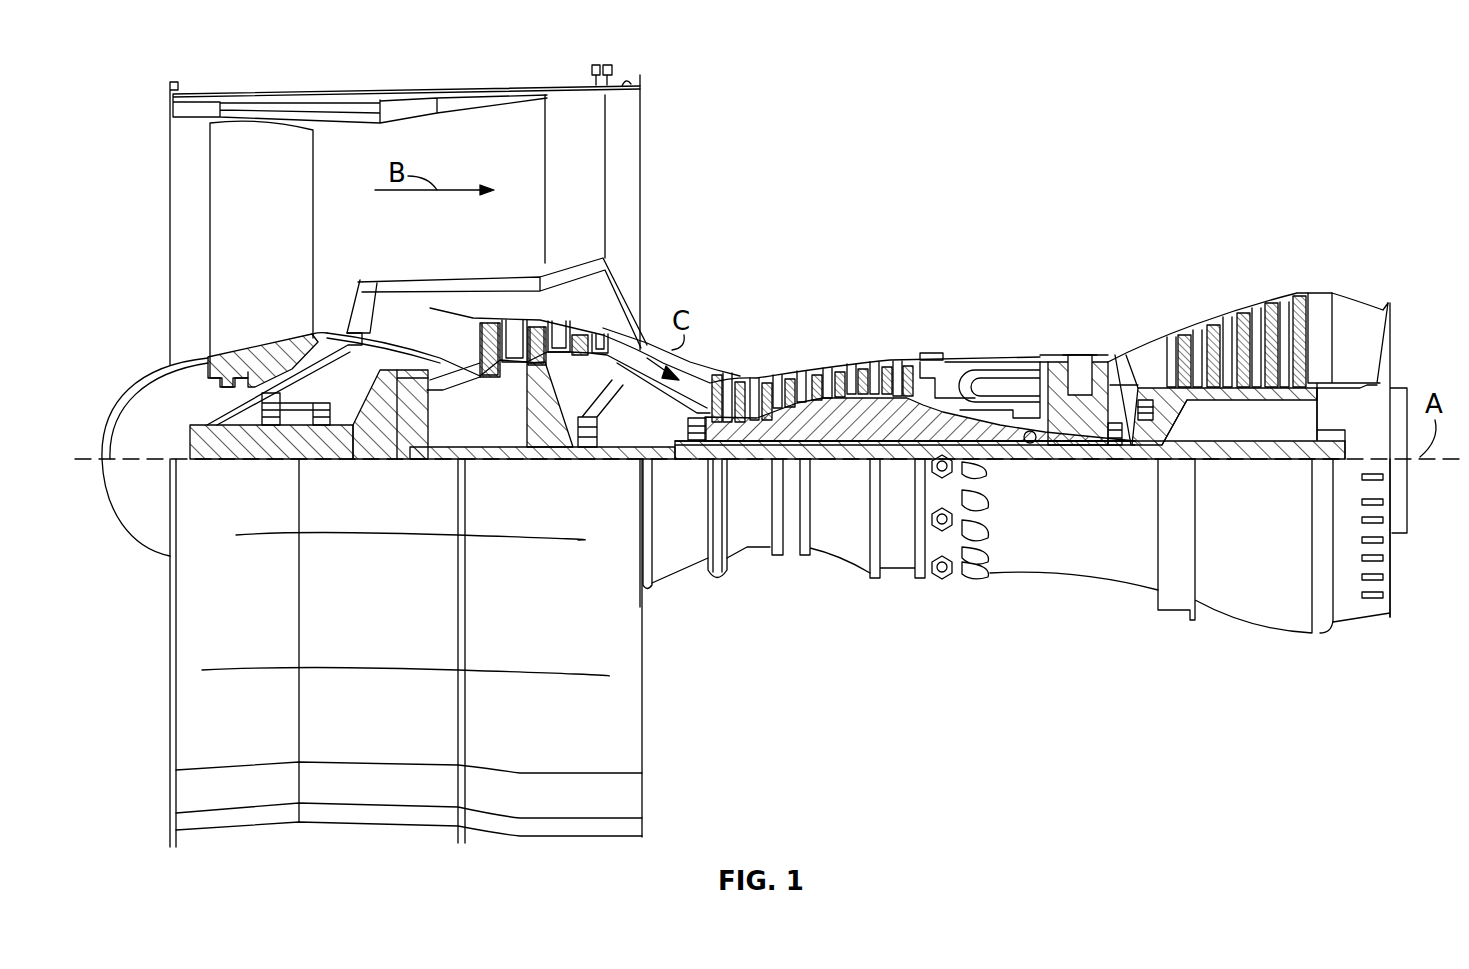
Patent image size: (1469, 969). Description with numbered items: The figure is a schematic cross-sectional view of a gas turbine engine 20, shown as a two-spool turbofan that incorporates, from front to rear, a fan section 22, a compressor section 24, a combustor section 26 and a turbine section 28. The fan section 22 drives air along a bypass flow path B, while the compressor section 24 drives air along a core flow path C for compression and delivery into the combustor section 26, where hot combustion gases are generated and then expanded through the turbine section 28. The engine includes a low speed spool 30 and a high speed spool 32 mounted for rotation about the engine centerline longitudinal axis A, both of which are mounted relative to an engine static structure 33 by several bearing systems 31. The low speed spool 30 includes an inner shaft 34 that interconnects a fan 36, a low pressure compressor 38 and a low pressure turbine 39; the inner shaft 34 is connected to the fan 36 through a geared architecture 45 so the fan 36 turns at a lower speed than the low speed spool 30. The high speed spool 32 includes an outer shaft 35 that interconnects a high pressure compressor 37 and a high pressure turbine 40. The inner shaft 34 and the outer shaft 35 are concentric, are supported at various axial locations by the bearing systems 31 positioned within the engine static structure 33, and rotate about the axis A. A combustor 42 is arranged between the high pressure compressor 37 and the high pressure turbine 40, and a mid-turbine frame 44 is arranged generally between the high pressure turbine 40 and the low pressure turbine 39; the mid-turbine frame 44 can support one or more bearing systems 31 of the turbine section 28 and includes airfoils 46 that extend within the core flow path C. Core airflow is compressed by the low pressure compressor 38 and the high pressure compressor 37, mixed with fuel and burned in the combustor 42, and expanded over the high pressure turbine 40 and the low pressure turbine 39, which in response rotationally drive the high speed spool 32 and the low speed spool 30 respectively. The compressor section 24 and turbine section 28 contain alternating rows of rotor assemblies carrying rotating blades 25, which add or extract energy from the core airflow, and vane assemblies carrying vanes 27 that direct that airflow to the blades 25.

The gas turbine engine 20 is at (1232, 138).
The fan section 22 is at (408, 66).
The compressor section 24 is at (826, 290).
The blades 25 is at (487, 330).
The combustor section 26 is at (1044, 280).
The vanes 27 is at (513, 330).
The turbine section 28 is at (1300, 208).
The low speed spool 30 is at (854, 468).
The bearing systems 31 is at (272, 425).
The high speed spool 32 is at (915, 410).
The engine static structure 33 is at (896, 580).
The inner shaft 34 is at (668, 453).
The outer shaft 35 is at (1035, 452).
The fan 36 is at (275, 213).
The high pressure compressor 37 is at (790, 380).
The low pressure compressor 38 is at (557, 330).
The low pressure turbine 39 is at (1247, 318).
The high pressure turbine 40 is at (1078, 356).
The combustor 42 is at (1000, 385).
The mid-turbine frame 44 is at (1124, 348).
The geared architecture 45 is at (397, 430).
The airfoils 46 is at (1118, 350).